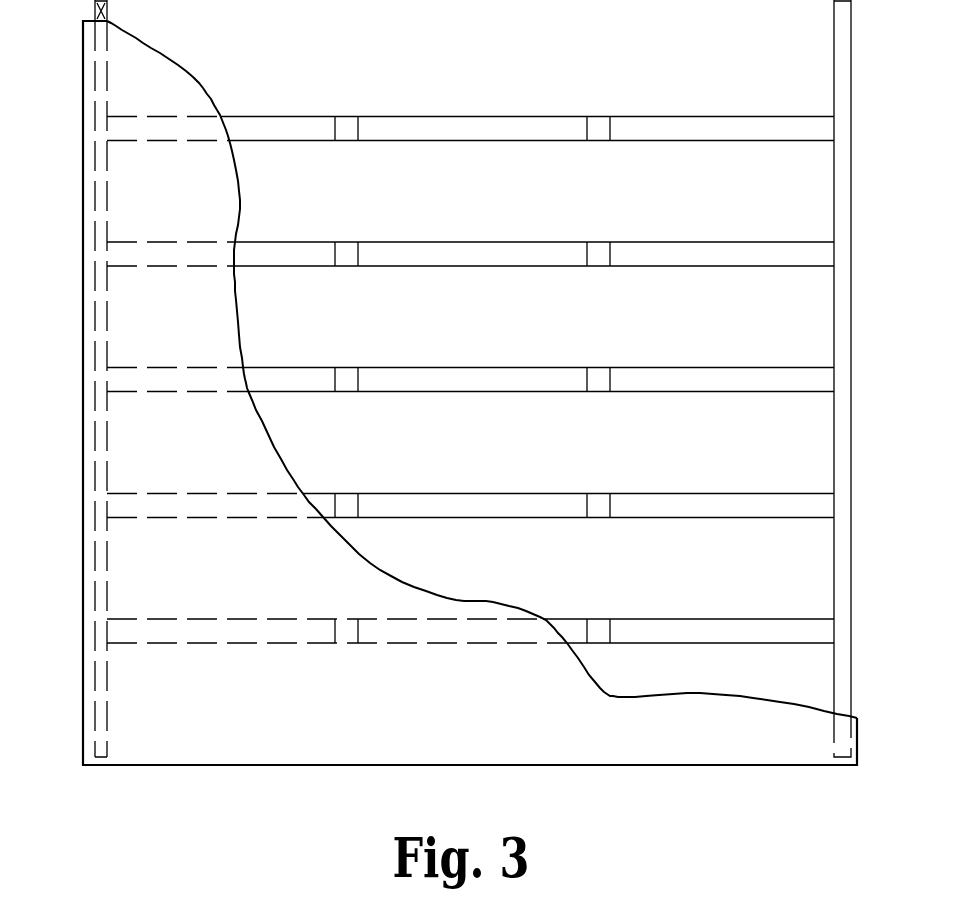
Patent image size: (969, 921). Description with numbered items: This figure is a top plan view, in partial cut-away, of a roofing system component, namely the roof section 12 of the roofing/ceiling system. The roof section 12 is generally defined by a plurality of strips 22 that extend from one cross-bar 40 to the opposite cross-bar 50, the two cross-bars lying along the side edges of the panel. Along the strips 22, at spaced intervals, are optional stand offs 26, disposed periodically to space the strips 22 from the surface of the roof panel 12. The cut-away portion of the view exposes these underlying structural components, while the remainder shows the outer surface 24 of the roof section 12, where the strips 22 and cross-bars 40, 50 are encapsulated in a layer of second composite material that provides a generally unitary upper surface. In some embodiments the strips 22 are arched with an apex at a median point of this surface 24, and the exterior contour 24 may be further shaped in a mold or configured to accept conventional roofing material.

The roof section 12 is at (153, 318).
The strips 22 is at (786, 128).
The upper surface 24 is at (198, 586).
The stand offs 26 is at (350, 131).
The cross-bar 40 is at (98, 435).
The cross-bar 50 is at (847, 425).